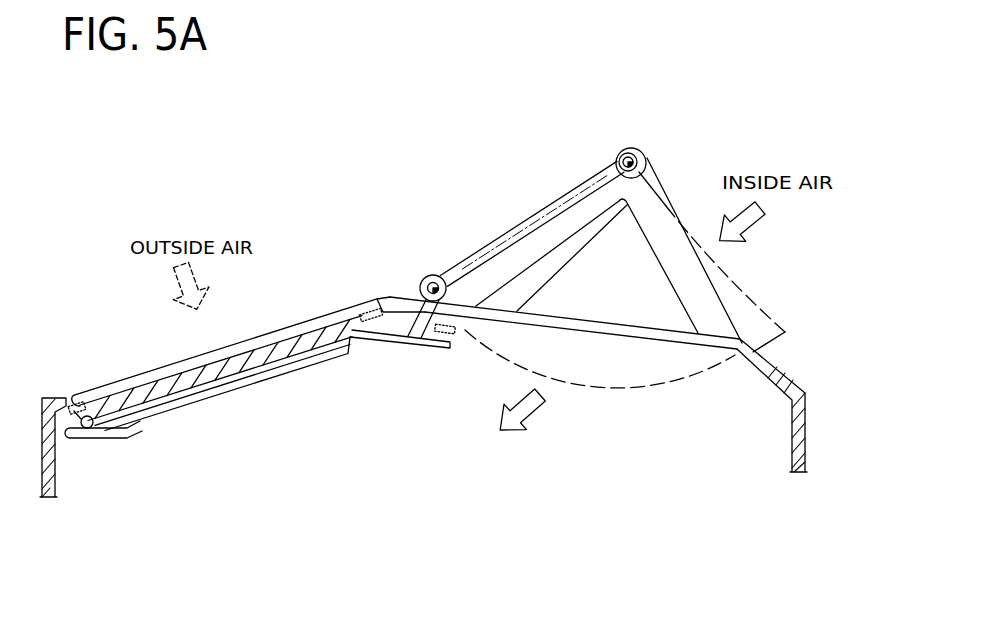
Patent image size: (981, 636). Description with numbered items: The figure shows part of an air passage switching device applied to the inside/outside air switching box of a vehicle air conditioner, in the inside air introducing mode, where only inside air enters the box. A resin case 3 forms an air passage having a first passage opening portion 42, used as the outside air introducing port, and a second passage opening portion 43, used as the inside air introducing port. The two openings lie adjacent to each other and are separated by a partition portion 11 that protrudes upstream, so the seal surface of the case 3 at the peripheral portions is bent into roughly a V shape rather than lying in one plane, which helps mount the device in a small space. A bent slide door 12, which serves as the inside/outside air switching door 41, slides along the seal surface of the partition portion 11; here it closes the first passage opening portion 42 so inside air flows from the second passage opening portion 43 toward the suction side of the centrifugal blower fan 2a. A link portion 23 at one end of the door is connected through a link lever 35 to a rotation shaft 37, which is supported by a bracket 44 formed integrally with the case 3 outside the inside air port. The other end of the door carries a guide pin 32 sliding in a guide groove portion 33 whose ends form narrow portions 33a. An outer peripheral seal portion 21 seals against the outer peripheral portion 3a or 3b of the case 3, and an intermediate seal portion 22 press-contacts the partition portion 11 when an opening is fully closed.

The case 3 is at (805, 423).
The outer peripheral portion 3a is at (63, 398).
The outer peripheral portion 3b is at (787, 380).
The partition portion 11 is at (375, 308).
The slide door 12 is at (253, 367).
The inside/outside air switching door 41 is at (220, 369).
The outer peripheral seal portion 21 is at (93, 402).
The intermediate seal portion 22 is at (350, 315).
The link portion 23 is at (421, 282).
The guide pin 32 is at (89, 429).
The guide groove portion 33 is at (210, 397).
The narrow portion 33a is at (103, 425).
The link lever 35 is at (522, 223).
The rotation shaft 37 is at (620, 153).
The first passage opening portion 42 is at (245, 341).
The second passage opening portion 43 is at (620, 327).
The bracket 44 is at (565, 237).
The centrifugal blower fan 2a is at (517, 423).